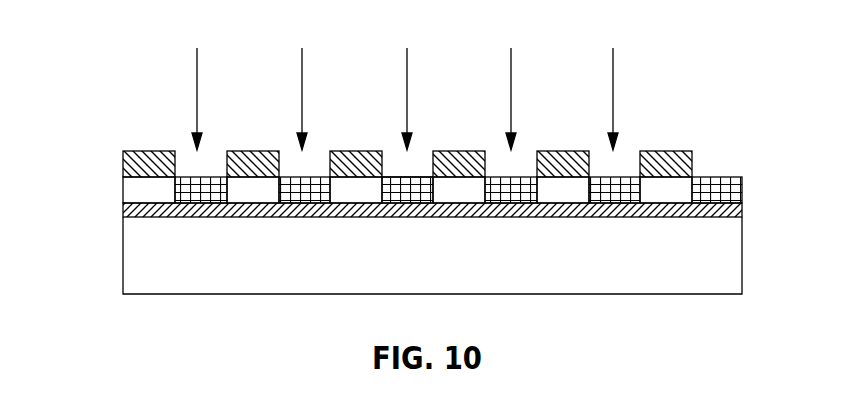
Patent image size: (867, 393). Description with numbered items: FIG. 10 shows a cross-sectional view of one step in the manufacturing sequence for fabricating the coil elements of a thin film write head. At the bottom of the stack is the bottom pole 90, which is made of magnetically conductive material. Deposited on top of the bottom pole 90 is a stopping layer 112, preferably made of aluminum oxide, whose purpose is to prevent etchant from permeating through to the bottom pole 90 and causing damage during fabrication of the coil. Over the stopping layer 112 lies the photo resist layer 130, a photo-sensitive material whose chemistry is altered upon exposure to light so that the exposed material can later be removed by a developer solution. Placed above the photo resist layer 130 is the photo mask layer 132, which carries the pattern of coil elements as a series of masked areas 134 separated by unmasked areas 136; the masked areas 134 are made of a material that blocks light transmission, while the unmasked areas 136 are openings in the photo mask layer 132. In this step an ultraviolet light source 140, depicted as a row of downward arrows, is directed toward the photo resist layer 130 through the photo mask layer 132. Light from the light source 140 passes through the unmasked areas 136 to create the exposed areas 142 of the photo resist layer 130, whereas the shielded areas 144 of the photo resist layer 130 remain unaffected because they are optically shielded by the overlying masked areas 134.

The bottom pole 90 is at (432, 255).
The stopping layer 112 is at (512, 208).
The photo resist layer 130 is at (448, 190).
The photo mask layer 132 is at (692, 163).
The masked areas 134 is at (467, 152).
The unmasked areas 136 is at (407, 165).
The ultraviolet light source 140 is at (405, 88).
The exposed areas 142 is at (193, 188).
The shielded areas 144 is at (137, 191).